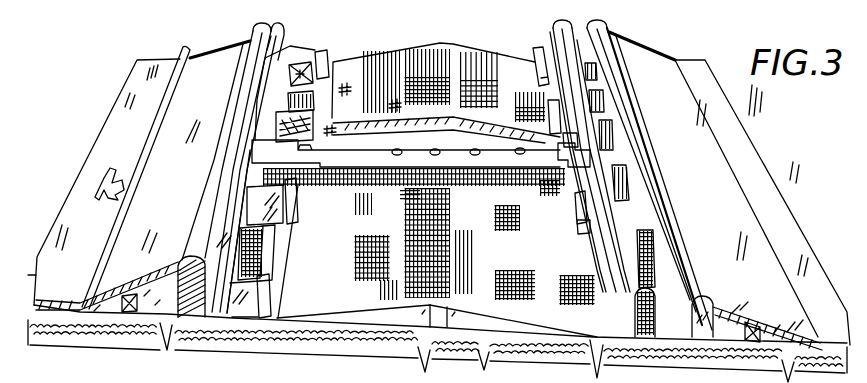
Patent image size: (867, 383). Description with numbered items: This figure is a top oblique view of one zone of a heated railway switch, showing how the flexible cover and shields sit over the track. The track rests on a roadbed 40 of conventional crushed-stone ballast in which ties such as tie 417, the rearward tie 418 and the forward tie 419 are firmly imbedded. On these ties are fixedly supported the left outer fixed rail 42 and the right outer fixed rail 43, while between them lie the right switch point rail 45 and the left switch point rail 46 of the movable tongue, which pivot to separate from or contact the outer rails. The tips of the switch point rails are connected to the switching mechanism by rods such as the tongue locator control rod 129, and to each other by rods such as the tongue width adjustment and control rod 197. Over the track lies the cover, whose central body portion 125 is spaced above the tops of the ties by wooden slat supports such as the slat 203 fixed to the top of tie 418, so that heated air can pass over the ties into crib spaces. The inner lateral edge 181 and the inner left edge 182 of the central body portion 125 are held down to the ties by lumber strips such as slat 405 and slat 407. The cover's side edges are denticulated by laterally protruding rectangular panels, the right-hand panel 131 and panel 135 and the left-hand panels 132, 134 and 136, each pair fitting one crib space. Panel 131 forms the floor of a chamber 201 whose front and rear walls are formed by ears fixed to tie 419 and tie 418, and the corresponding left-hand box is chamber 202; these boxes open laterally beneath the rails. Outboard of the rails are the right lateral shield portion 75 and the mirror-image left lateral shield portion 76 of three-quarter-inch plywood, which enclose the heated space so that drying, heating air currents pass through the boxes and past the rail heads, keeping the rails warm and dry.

The roadbed 40 is at (723, 361).
The left outer fixed rail 42 is at (612, 32).
The right outer fixed rail 43 is at (253, 36).
The right switch point rail 45 is at (285, 35).
The left switch point rail 46 is at (552, 32).
The right lateral shield portion 75 is at (137, 68).
The left lateral shield portion 76 is at (708, 58).
The central body portion of cover 125 is at (398, 56).
The tongue locator control rod 129 is at (140, 126).
The laterally protruding rectangular panel 131 is at (260, 262).
The laterally protruding rectangular panel 132 is at (658, 277).
The laterally protruding rectangular panel 134 is at (638, 193).
The laterally protruding rectangular panel 135 is at (285, 105).
The laterally protruding rectangular panel 136 is at (598, 102).
The inner lateral edge of cover body portion 181 is at (274, 253).
The inner left edge of cover body portion 182 is at (598, 259).
The tongue width adjustment and control rod 197 is at (474, 187).
The chamber 201 is at (299, 256).
The chamber 202 is at (698, 283).
The wooden slat support 203 is at (444, 328).
The slat 405 is at (386, 61).
The slat 407 is at (533, 68).
The tie 417 is at (313, 108).
The rearward tie 418 is at (277, 207).
The forward tie 419 is at (250, 292).